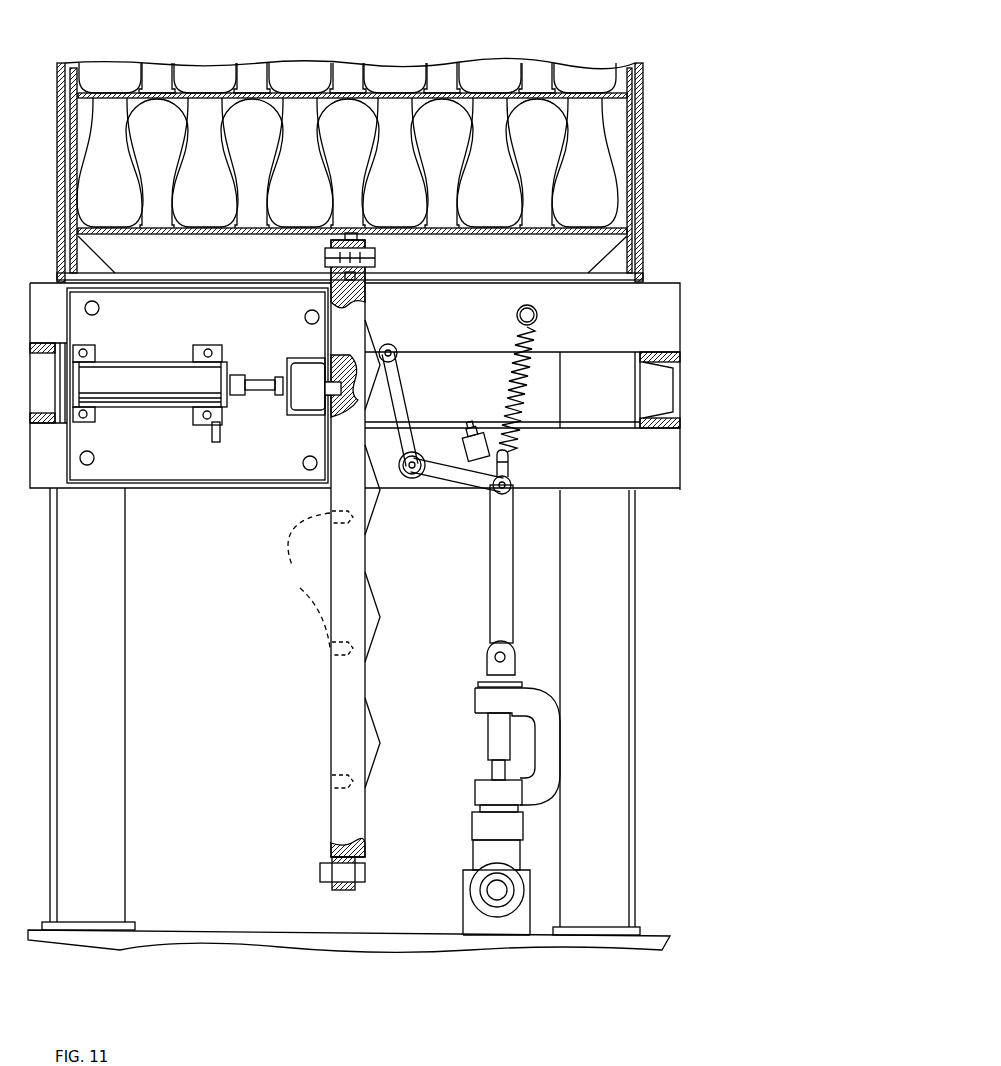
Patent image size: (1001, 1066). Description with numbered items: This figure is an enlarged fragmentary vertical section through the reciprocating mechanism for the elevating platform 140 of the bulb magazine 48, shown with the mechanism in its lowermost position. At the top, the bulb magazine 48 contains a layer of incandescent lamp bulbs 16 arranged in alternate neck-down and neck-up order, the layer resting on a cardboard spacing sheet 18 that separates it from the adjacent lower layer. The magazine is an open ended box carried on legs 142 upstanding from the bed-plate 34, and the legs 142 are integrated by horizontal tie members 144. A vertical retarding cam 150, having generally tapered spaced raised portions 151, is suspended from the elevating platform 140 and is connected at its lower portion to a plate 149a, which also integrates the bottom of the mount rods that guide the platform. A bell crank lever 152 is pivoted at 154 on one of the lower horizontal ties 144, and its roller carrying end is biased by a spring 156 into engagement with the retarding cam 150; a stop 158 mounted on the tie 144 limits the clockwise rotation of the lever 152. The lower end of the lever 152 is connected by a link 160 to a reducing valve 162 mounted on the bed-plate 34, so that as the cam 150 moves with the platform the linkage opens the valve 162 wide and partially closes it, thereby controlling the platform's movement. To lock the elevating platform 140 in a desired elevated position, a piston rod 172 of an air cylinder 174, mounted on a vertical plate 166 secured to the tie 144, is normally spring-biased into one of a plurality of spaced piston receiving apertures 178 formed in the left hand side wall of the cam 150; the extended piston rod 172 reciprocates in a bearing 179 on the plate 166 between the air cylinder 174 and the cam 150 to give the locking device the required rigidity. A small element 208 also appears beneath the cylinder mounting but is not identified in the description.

The incandescent lamp bulbs 16 is at (243, 213).
The spacing sheet 18 is at (348, 102).
The bulb magazine 48 is at (655, 130).
The elevating platform 140 is at (612, 234).
The horizontal tie members 144 is at (40, 345).
The legs 142 is at (120, 845).
The bed-plate 34 is at (230, 938).
The vertical plate 166 is at (228, 472).
The air cylinder 174 is at (132, 402).
The bracket tab 208 is at (213, 432).
The piston rod 172 is at (263, 381).
The piston receiving apertures 178 is at (328, 383).
The bearing 179 is at (303, 412).
The vertical retarding cam 150 is at (355, 558).
The plate 149a is at (357, 890).
The tapered spaced raised portions 151 is at (373, 382).
The bell crank lever 152 is at (403, 400).
The pivot 154 is at (413, 478).
The link 160 is at (508, 590).
The spring 156 is at (531, 352).
The stop 158 is at (466, 440).
The reducing valve 162 is at (480, 827).